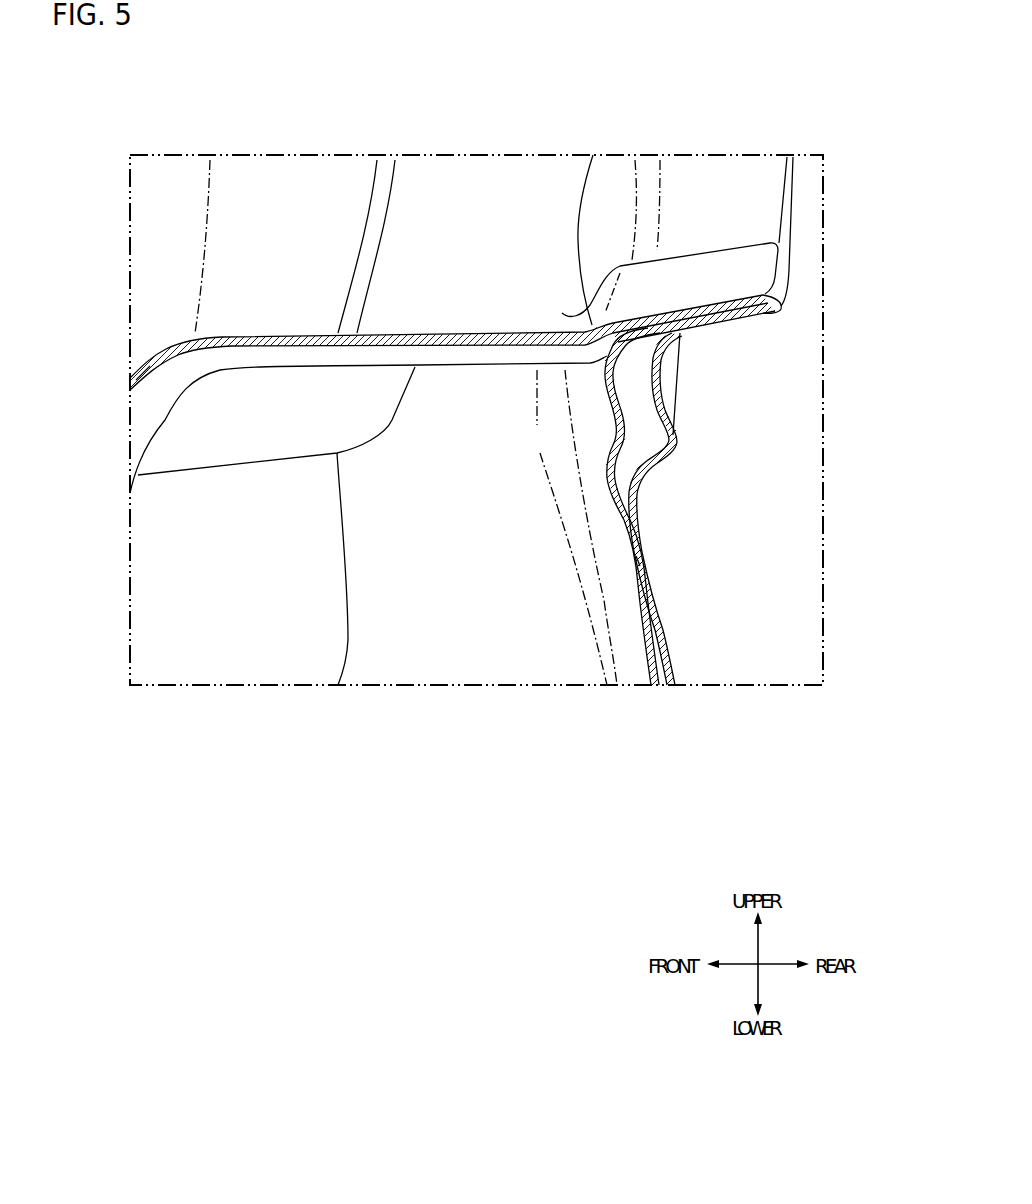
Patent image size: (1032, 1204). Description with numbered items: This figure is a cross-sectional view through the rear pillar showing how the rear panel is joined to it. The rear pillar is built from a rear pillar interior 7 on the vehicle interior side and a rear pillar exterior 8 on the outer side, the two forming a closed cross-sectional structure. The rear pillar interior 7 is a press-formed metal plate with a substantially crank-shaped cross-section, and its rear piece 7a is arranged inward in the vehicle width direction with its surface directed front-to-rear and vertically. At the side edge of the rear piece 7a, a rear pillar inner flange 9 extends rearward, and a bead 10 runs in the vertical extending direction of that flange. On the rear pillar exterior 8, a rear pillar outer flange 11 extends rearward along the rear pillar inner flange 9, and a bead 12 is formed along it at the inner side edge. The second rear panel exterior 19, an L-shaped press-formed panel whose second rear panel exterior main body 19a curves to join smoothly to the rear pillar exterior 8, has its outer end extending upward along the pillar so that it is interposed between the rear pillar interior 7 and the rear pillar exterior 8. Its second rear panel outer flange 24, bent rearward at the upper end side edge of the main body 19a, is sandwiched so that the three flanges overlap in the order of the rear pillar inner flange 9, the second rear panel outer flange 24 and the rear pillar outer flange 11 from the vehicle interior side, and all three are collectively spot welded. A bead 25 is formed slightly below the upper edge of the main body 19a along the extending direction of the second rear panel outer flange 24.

The rear pillar interior 7 is at (146, 309).
The rear piece 7a is at (488, 230).
The rear pillar exterior 8 is at (684, 436).
The rear pillar inner flange 9 is at (713, 267).
The bead 10 is at (588, 170).
The rear pillar outer flange 11 is at (737, 321).
The bead 12 is at (676, 447).
The second rear panel exterior 19 is at (628, 594).
The second rear panel exterior main body 19a is at (635, 562).
The second rear panel outer flange 24 is at (782, 303).
The bead 25 is at (613, 432).